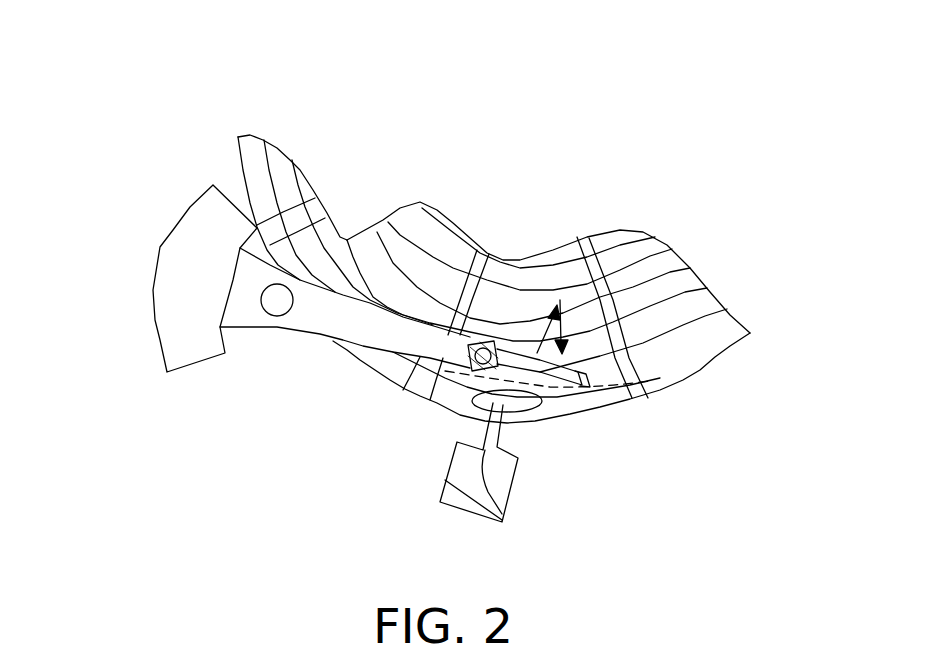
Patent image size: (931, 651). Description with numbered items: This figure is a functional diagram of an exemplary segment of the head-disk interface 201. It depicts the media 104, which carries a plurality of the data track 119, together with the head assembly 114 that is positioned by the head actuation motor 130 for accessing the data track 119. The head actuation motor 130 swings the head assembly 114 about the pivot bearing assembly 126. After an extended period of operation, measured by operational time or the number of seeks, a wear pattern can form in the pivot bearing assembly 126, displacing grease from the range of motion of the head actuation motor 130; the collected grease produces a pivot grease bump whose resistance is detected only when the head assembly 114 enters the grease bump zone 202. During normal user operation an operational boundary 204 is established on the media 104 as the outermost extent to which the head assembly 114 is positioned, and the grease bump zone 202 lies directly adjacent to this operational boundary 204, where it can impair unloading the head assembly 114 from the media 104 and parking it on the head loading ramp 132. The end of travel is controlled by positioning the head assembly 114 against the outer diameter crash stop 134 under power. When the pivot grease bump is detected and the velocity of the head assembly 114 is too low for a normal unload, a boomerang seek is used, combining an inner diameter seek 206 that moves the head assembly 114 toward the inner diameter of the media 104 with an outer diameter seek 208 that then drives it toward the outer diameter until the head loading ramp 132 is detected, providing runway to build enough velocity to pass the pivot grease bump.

The head-disk interface 201 is at (238, 105).
The media 104 is at (316, 146).
The head actuation motor 130 is at (193, 310).
The pivot bearing assembly 126 is at (277, 300).
The grease bump zone 202 is at (527, 401).
The inner diameter seek 206 is at (538, 330).
The outer diameter seek 208 is at (605, 300).
The data track 119 is at (650, 325).
The head assembly 114 is at (570, 393).
The operational boundary 204 is at (650, 381).
The outer diameter crash stop 134 is at (457, 500).
The head loading ramp 132 is at (527, 413).